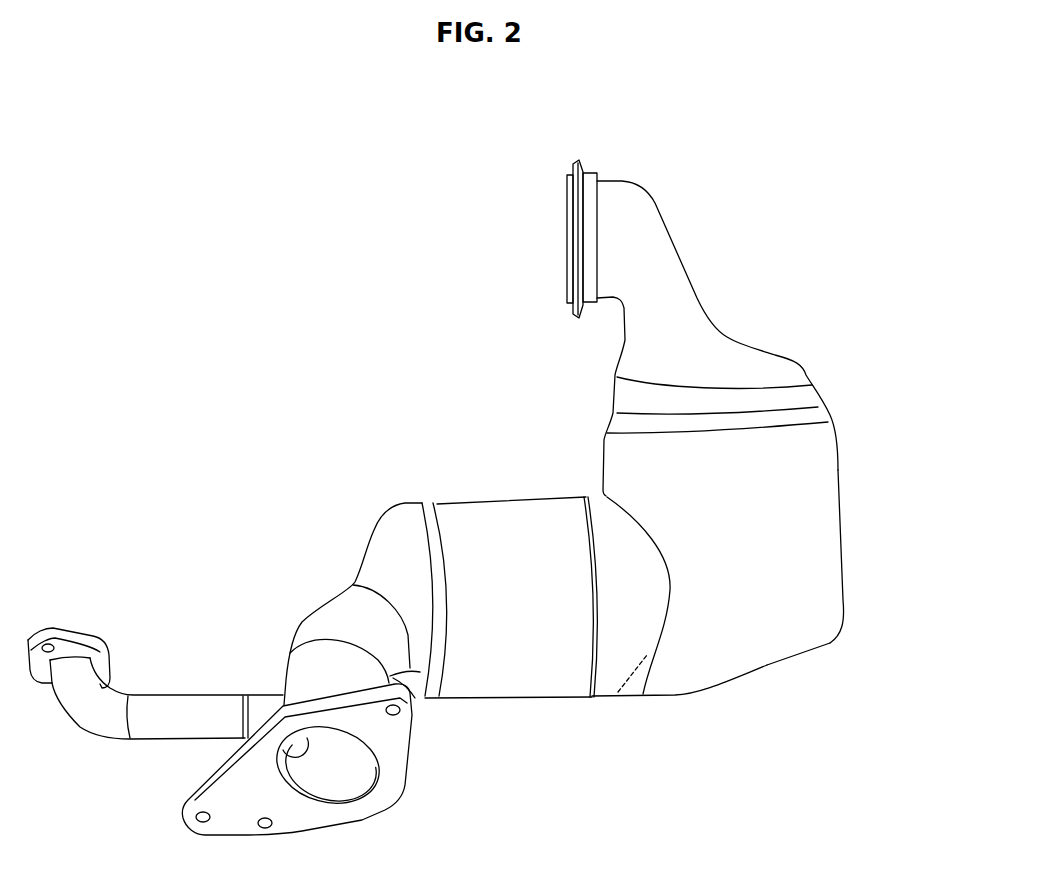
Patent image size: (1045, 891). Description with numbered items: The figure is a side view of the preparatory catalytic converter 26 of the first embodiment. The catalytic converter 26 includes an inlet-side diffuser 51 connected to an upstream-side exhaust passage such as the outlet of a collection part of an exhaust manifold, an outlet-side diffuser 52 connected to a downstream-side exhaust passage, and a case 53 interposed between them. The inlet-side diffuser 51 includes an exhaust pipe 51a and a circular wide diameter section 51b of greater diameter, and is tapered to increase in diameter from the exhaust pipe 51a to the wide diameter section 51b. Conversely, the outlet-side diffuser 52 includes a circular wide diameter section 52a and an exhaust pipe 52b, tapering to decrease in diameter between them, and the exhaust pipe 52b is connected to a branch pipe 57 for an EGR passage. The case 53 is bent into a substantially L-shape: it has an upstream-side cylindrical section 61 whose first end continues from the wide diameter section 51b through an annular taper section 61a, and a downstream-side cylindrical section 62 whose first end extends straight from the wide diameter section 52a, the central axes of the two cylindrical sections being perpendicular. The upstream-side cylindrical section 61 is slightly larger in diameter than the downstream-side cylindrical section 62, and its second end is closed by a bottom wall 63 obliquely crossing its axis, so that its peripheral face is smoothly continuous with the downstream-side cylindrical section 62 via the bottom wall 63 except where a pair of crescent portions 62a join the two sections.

The catalytic converter 26 is at (742, 722).
The inlet-side diffuser 51 is at (683, 308).
The exhaust pipe 51a is at (626, 214).
The wide diameter section 51b is at (763, 396).
The outlet-side diffuser 52 is at (377, 566).
The wide diameter section 52a is at (428, 512).
The exhaust pipe 52b is at (340, 614).
The case 53 is at (813, 622).
The branch pipe 57 is at (90, 710).
The upstream-side cylindrical section 61 is at (822, 533).
The taper section 61a is at (817, 415).
The downstream-side cylindrical section 62 is at (505, 673).
The crescent portions 62a is at (638, 615).
The bottom wall 63 is at (767, 665).